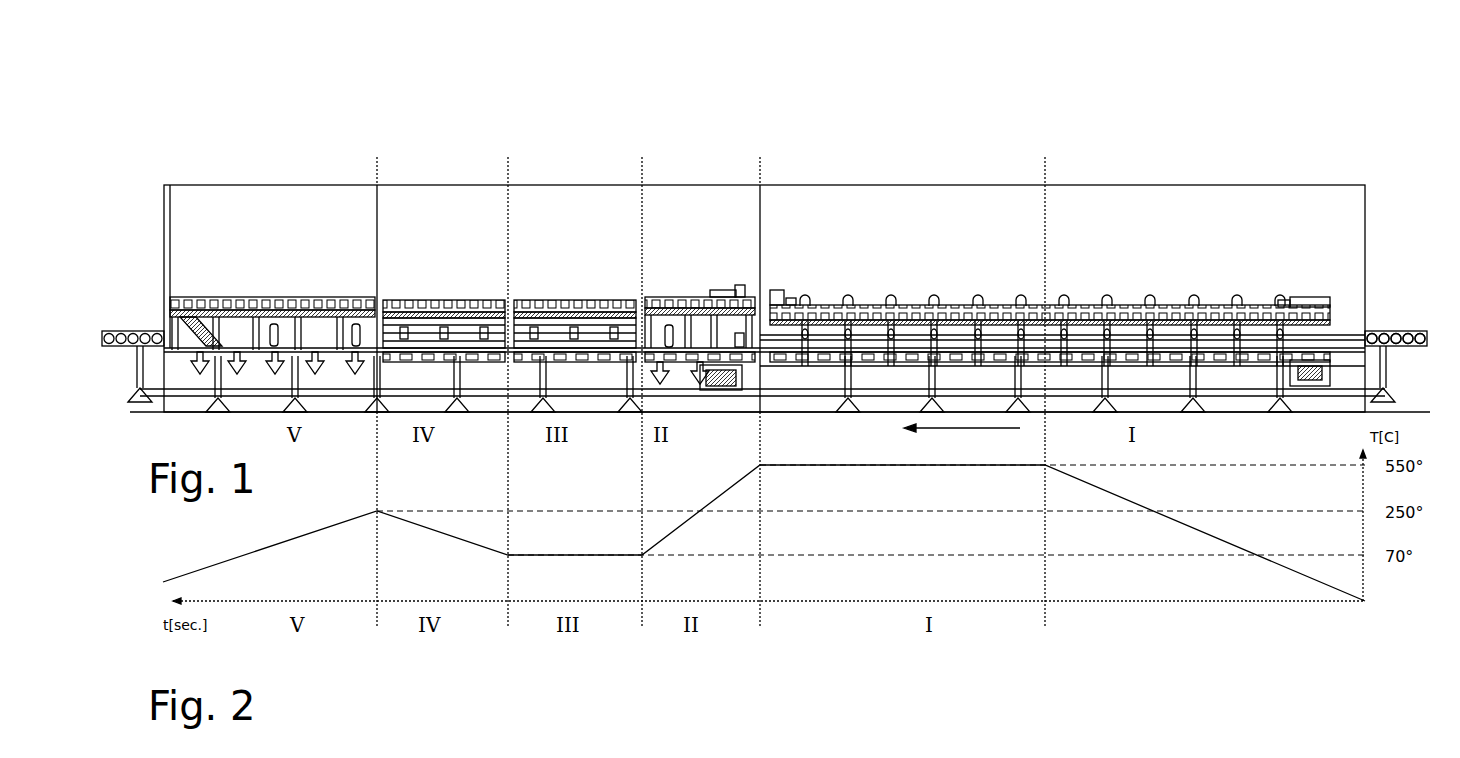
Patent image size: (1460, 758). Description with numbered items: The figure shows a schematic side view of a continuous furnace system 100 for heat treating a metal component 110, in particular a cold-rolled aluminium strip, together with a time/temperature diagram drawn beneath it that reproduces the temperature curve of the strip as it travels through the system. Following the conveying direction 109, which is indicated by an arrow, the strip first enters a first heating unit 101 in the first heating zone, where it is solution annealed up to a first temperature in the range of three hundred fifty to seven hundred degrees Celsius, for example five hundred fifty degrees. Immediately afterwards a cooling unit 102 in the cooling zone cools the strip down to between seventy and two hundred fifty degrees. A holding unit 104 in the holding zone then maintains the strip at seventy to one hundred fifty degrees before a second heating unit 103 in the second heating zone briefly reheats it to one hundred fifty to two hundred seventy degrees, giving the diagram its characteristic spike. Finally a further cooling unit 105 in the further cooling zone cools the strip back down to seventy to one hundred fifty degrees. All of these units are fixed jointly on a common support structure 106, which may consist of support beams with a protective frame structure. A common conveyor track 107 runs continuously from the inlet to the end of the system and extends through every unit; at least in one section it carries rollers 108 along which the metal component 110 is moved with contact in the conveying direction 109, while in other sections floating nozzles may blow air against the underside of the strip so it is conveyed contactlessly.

The continuous furnace system 100 is at (982, 136).
The first heating unit 101 is at (863, 185).
The cooling unit 102 is at (701, 185).
The second heating unit 103 is at (438, 185).
The holding unit 104 is at (577, 185).
The further cooling unit 105 is at (262, 185).
The support structure 106 is at (874, 404).
The conveyor track 107 is at (128, 350).
The rollers 108 is at (1408, 334).
The conveying direction 109 is at (1024, 428).
The metal component 110 is at (106, 332).